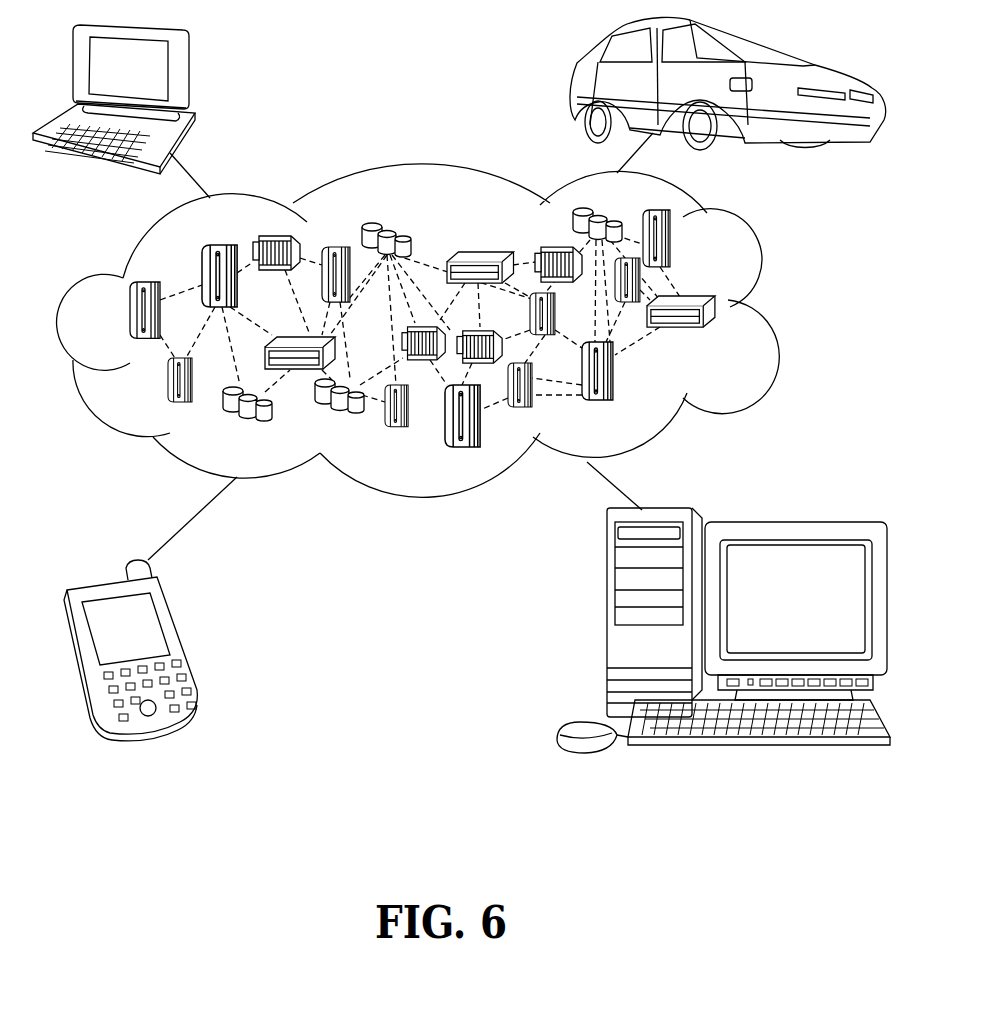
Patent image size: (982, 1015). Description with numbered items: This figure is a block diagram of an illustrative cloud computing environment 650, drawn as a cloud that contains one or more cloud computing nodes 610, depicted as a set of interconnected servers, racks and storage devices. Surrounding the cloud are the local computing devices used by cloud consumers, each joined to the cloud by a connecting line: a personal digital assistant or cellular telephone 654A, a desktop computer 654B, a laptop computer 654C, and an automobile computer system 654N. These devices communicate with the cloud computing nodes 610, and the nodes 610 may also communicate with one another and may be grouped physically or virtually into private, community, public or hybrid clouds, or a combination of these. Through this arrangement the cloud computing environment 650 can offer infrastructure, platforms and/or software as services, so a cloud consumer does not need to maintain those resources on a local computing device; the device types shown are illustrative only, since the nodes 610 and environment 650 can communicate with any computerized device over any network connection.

The cloud computing environment 650 is at (760, 273).
The cloud computing nodes 610 is at (737, 333).
The personal digital assistant (PDA) or cellular telephone 654A is at (182, 642).
The desktop computer 654B is at (607, 623).
The laptop computer 654C is at (189, 70).
The automobile computer system 654N is at (580, 80).